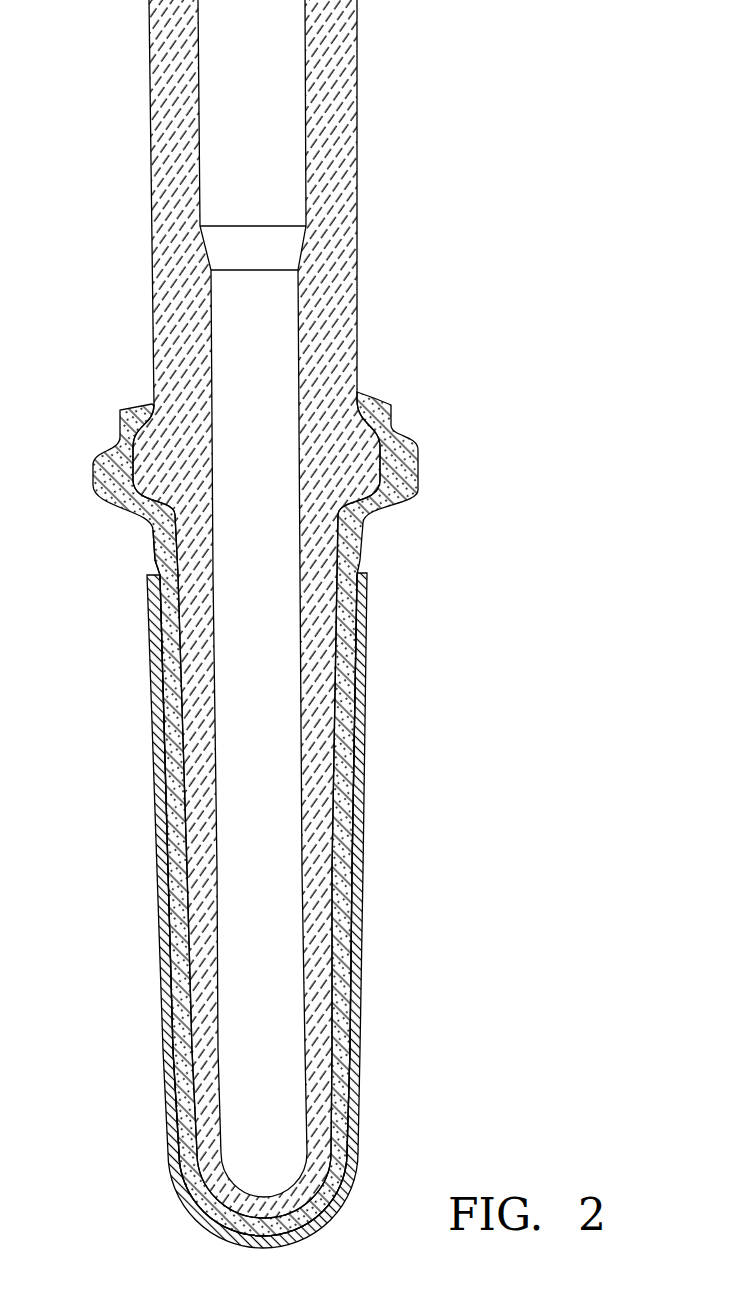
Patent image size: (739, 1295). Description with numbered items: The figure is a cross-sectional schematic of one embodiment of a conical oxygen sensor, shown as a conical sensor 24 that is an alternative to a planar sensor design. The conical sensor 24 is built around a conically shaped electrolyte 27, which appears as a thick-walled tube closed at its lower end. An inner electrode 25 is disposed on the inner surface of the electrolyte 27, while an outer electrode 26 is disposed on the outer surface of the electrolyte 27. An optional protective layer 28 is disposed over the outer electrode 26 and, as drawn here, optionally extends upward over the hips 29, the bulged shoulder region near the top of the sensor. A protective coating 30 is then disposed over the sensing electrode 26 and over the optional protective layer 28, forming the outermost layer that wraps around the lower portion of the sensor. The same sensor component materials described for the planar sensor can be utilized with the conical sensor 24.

The conical sensor 24 is at (427, 127).
The inner electrode 25 is at (301, 533).
The outer electrode 26 is at (340, 1032).
The conically shaped electrolyte 27 is at (356, 353).
The protective layer 28 is at (153, 530).
The hips 29 is at (381, 447).
The protective coating 30 is at (157, 902).